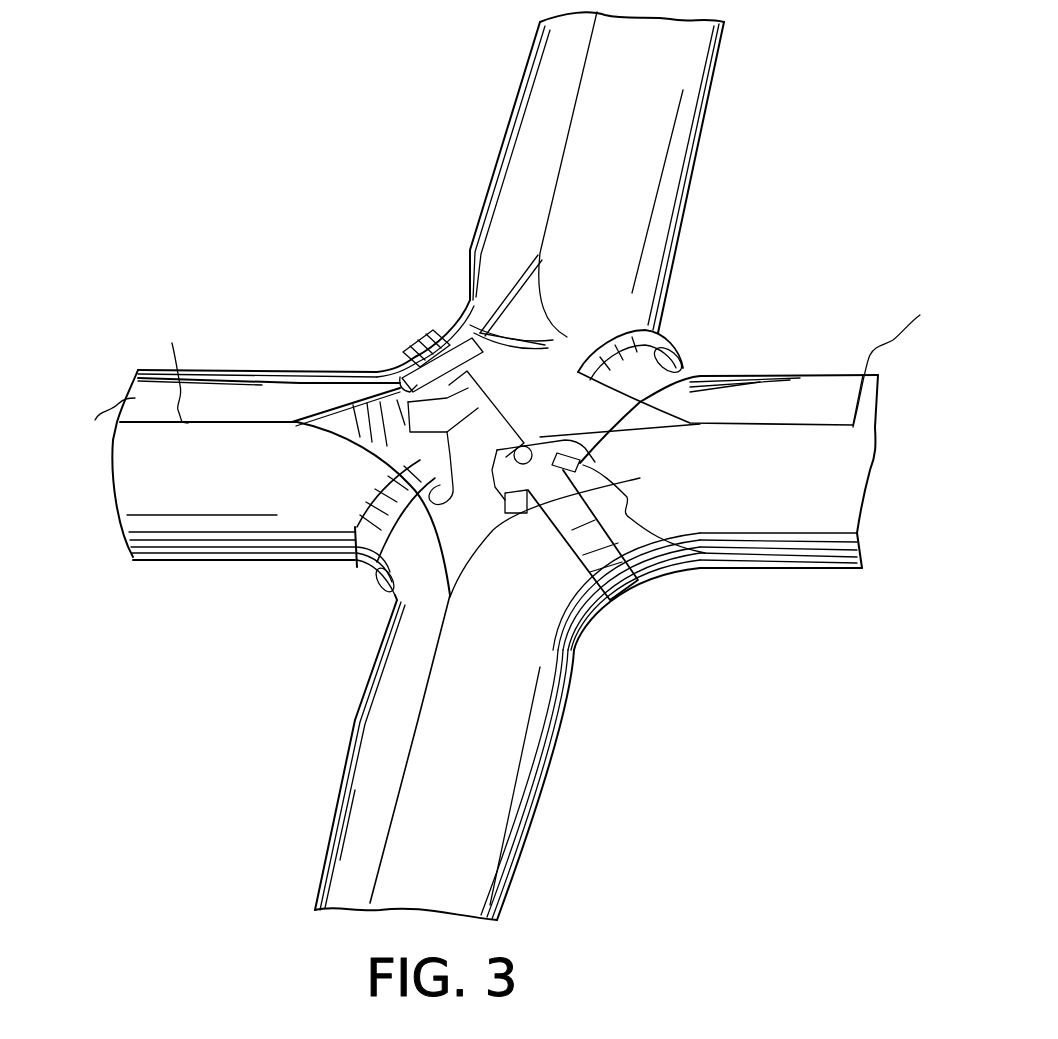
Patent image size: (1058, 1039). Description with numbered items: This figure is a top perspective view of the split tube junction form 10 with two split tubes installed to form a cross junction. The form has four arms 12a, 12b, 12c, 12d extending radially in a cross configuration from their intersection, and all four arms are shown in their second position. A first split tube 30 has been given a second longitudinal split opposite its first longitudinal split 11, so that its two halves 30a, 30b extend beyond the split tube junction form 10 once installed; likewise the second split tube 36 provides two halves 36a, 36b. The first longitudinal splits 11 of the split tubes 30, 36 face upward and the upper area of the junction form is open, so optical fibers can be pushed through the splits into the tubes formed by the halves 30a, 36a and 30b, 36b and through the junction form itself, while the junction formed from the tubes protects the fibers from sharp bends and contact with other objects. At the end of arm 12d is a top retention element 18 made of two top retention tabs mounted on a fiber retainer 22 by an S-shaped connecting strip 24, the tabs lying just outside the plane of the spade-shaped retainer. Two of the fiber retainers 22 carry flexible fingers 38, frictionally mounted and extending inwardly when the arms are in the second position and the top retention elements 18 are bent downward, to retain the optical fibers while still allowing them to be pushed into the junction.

The split tube junction form 10 is at (680, 325).
The first longitudinal split 11 is at (549, 359).
The arm 12a is at (425, 337).
The arm 12b is at (362, 598).
The arm 12c is at (685, 368).
The arm 12d is at (635, 600).
The top retention element 18 is at (568, 345).
The fiber retainer 22 is at (508, 515).
The connecting strip 24 is at (733, 380).
The first split tube 30 is at (148, 458).
The first half of first split tube 30a is at (520, 151).
The second half of first split tube 30b is at (355, 520).
The second split tube 36 is at (870, 413).
The first half of second split tube 36a is at (680, 132).
The second half of second split tube 36b is at (500, 848).
The flexible finger 38 is at (457, 355).